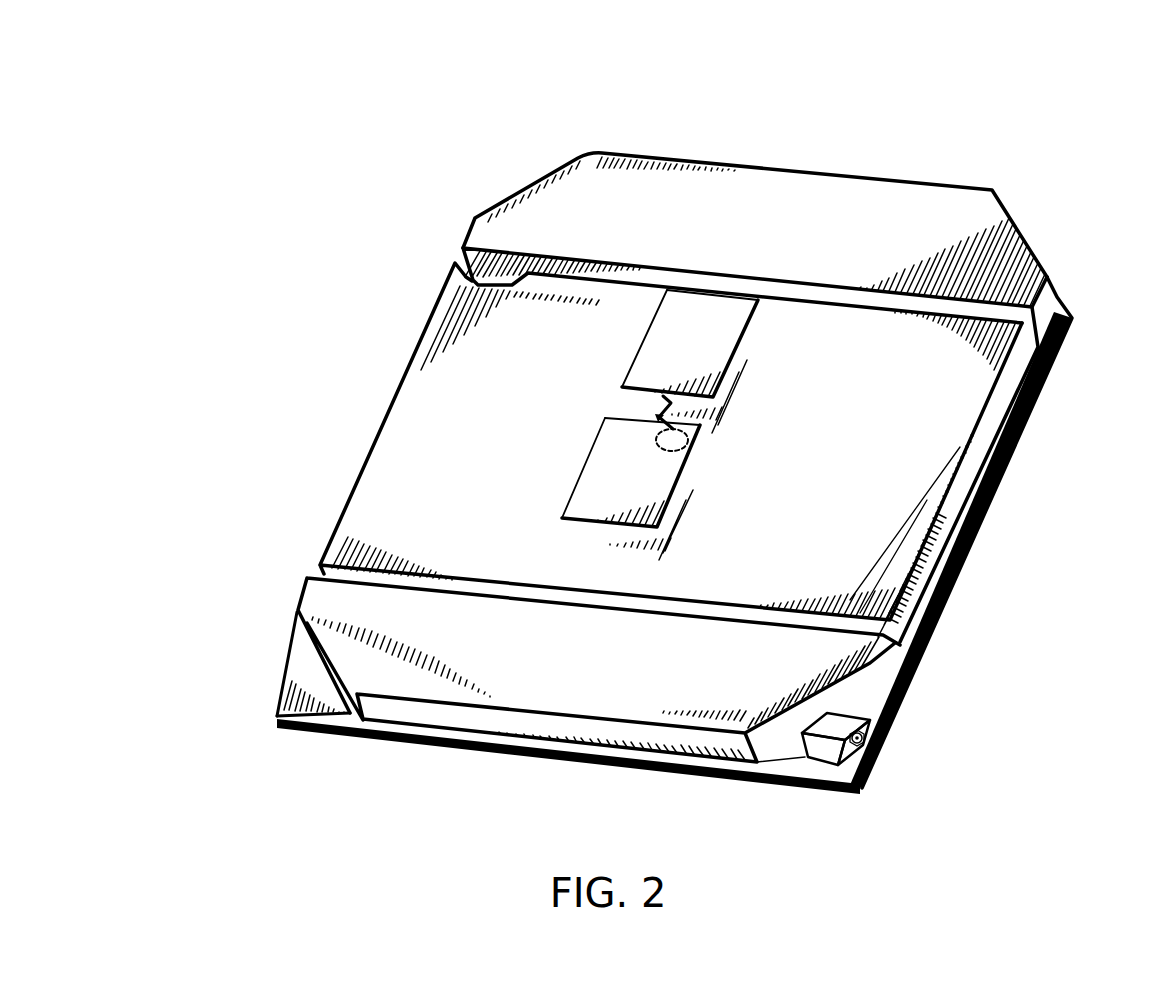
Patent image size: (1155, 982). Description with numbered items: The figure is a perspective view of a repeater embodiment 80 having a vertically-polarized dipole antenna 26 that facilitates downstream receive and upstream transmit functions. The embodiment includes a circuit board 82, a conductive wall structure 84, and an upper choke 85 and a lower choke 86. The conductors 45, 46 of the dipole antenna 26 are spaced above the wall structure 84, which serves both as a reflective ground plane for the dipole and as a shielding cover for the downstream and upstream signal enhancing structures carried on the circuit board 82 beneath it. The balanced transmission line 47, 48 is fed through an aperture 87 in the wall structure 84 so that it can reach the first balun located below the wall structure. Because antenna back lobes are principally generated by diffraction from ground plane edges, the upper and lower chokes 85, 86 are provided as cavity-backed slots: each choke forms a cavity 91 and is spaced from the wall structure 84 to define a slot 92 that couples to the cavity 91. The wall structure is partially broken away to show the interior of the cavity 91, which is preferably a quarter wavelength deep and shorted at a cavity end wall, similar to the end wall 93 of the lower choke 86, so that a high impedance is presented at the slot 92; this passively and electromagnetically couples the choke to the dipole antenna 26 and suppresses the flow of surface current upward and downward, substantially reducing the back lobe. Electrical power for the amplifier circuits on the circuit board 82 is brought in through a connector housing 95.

The repeater embodiment 80 is at (447, 183).
The cavity 91 is at (760, 183).
The upper choke 85 is at (920, 250).
The dipole antenna 26 is at (637, 297).
The slot 92 is at (788, 293).
The balanced transmission line 47 is at (653, 402).
The balanced transmission line 48 is at (647, 413).
The conductor 45 is at (685, 370).
The conductor 46 is at (595, 477).
The aperture 87 is at (660, 442).
The conductive wall structure 84 is at (922, 463).
The circuit board 82 is at (317, 683).
The lower choke 86 is at (717, 697).
The end wall 93 is at (500, 718).
The connector housing 95 is at (820, 752).